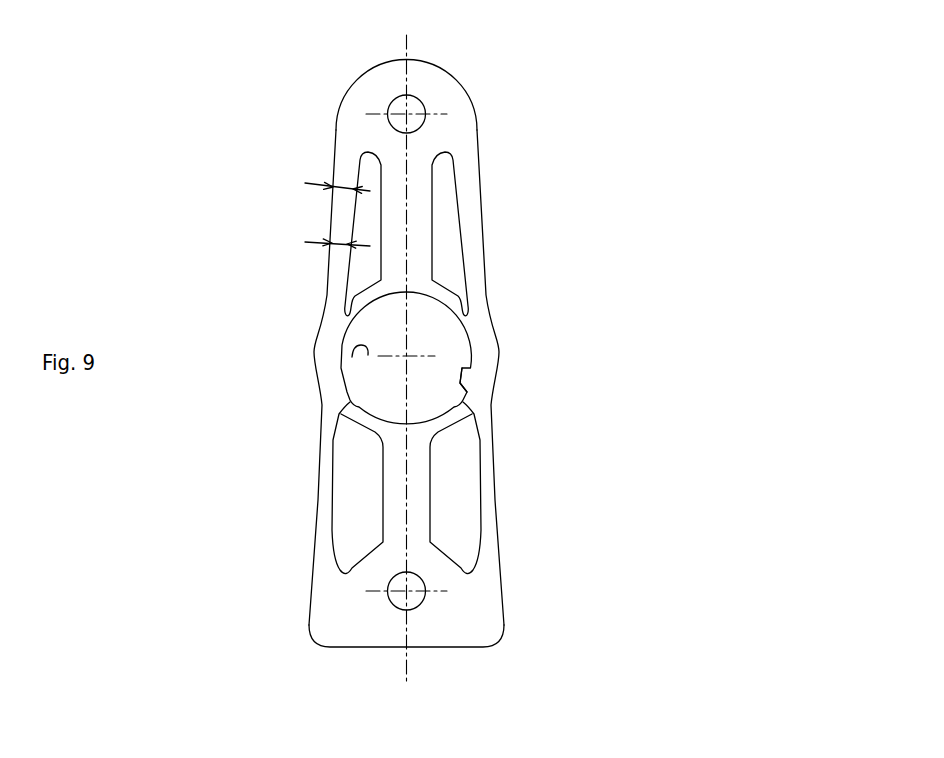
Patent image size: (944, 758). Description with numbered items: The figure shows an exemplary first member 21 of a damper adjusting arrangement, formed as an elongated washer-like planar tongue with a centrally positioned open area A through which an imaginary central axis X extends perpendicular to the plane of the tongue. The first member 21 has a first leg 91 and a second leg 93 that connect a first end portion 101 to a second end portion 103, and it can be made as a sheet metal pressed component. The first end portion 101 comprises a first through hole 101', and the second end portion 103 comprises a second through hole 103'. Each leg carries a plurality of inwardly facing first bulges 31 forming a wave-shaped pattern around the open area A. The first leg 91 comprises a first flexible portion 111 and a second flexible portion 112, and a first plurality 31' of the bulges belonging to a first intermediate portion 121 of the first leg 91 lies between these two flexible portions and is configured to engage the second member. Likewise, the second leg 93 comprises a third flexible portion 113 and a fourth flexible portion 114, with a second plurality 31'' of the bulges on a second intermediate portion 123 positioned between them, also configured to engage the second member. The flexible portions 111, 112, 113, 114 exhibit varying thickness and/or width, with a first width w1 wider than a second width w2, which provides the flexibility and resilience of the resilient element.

The first member 21 is at (620, 257).
The first end portion 101 is at (498, 94).
The first through hole 101' is at (377, 84).
The second end portion 103 is at (500, 640).
The second through hole 103' is at (425, 637).
The first flexible portion 111 is at (483, 227).
The third flexible portion 113 is at (332, 217).
The second flexible portion 112 is at (497, 487).
The fourth flexible portion 114 is at (313, 505).
The first bulges 31 is at (457, 340).
The first plurality of first bulges 31' is at (443, 376).
The second plurality of first bulges 31'' is at (367, 365).
The first leg 91 is at (525, 371).
The second leg 93 is at (285, 288).
The first intermediate portion 121 is at (495, 377).
The second intermediate portion 123 is at (313, 363).
The first width w1 is at (312, 184).
The second width w2 is at (312, 240).
The central axis X is at (425, 343).
The central open area A is at (387, 395).